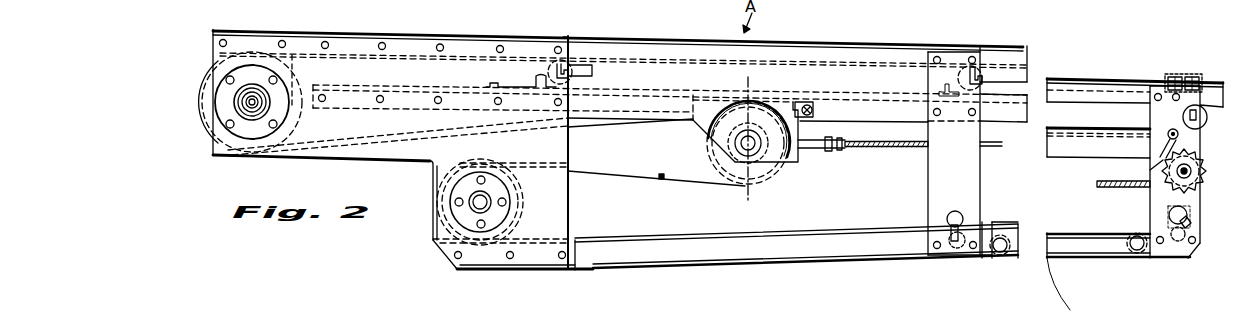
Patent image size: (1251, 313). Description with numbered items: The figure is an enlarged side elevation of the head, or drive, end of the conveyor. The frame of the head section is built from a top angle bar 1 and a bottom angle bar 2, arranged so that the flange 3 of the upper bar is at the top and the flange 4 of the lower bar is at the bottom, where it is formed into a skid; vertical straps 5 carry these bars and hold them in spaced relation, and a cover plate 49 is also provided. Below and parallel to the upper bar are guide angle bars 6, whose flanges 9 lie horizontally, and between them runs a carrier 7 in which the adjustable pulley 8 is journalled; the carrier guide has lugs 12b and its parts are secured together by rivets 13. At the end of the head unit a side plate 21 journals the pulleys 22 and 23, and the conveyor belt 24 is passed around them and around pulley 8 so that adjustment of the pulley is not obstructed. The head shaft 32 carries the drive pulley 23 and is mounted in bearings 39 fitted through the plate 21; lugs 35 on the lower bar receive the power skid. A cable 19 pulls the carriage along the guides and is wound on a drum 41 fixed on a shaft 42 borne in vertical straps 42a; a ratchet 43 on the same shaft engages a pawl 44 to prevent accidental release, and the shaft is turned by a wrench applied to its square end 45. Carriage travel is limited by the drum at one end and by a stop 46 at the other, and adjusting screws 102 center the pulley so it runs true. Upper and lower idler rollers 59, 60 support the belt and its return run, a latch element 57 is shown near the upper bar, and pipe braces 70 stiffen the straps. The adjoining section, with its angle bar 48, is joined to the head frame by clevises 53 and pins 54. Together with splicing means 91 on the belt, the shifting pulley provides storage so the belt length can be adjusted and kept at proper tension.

The top angle bar 1 is at (625, 50).
The bottom angle bar 2 is at (698, 258).
The flange 3 is at (812, 43).
The flange 4 is at (788, 266).
The vertical strap 5 is at (970, 187).
The guide angle bar 6 is at (881, 108).
The carrier 7 is at (777, 158).
The pulley 8 is at (719, 161).
The flange 9 is at (1068, 147).
The lug 12b is at (1174, 199).
The rivet 13 is at (748, 77).
The cable 19 is at (915, 150).
The plate 21 is at (423, 160).
The pulley 22 is at (452, 232).
The head pulley 23 is at (210, 93).
The conveyor belt 24 is at (394, 150).
The head shaft 32 is at (238, 108).
The lug 35 is at (593, 262).
The bearing 39 is at (254, 142).
The drum 41 is at (1206, 168).
The shaft 42 is at (1190, 173).
The vertical strap 42a is at (1190, 210).
The ratchet 43 is at (1198, 192).
The pawl 44 is at (1162, 150).
The square end 45 is at (1165, 182).
The stop 46 is at (231, 77).
The angle bar 48 is at (492, 85).
The cover plate 49 is at (864, 93).
The clevis 53 is at (1197, 83).
The pin 54 is at (1192, 76).
The latch hook 57 is at (592, 73).
The upper idler roller 59 is at (1004, 82).
The lower idler roller 60 is at (1218, 249).
The pipe brace 70 is at (1003, 254).
The splicing means 91 is at (660, 175).
The adjusting screw 102 is at (811, 115).